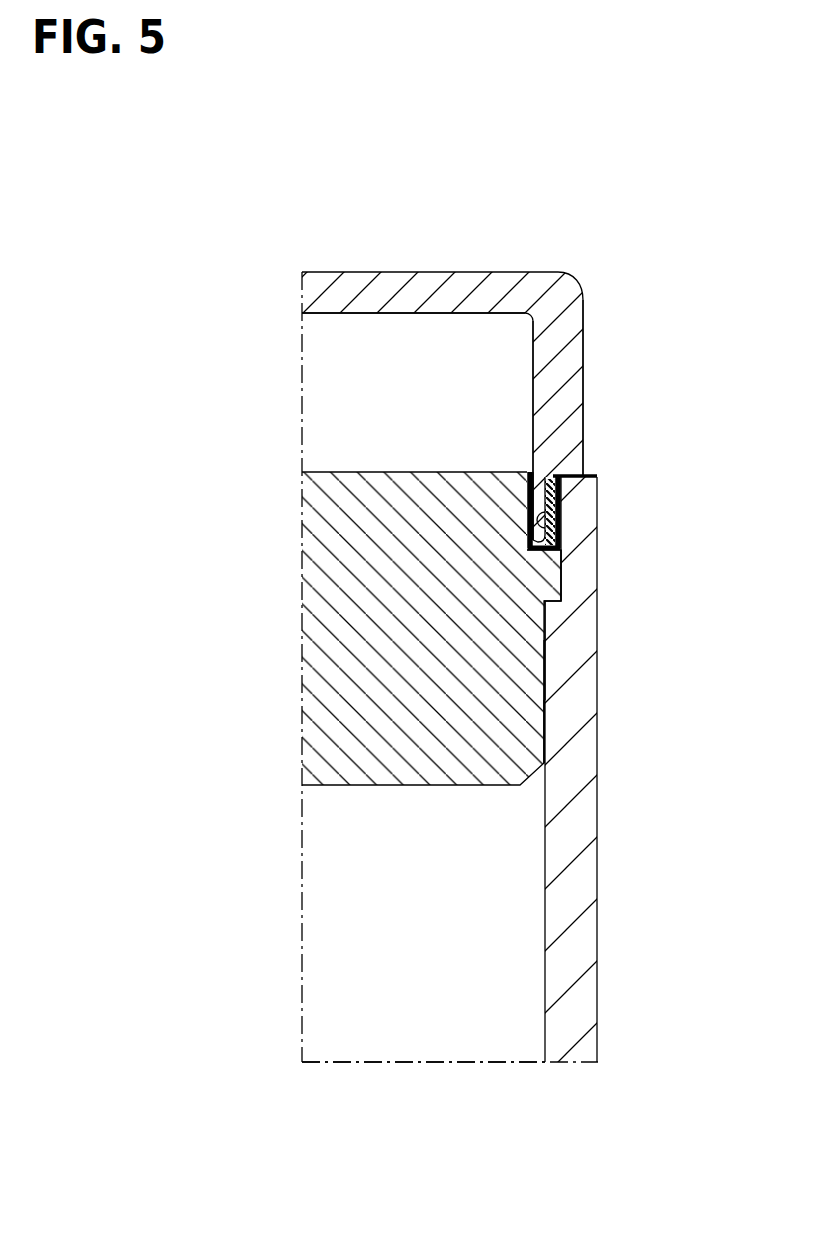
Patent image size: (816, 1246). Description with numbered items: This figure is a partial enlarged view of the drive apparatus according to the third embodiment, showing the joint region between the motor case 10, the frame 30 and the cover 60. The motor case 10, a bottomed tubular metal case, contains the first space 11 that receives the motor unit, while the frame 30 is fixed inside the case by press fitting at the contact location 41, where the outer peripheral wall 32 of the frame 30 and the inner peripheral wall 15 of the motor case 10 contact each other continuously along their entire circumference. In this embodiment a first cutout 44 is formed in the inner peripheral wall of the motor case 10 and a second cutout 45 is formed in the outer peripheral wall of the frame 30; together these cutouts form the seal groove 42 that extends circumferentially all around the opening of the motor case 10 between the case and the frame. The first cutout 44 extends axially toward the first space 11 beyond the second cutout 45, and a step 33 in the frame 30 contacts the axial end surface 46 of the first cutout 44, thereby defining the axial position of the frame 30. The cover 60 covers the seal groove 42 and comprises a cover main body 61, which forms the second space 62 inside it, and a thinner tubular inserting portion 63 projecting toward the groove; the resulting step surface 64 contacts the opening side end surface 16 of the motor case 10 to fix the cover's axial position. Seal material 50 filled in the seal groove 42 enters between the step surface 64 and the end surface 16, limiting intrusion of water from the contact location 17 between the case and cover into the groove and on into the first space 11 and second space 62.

The motor case 10 is at (572, 888).
The first space 11 is at (443, 938).
The inner peripheral wall 15 is at (550, 741).
The opening side end surface 16 is at (593, 478).
The contact location 17 is at (597, 470).
The frame 30 is at (378, 672).
The outer peripheral wall 32 is at (545, 692).
The step 33 is at (549, 604).
The contact location 41 is at (557, 669).
The seal groove 42 is at (562, 486).
The first cutout 44 is at (562, 509).
The second cutout 45 is at (526, 540).
The axial end surface 46 is at (563, 593).
The seal material 50 is at (562, 539).
The cover 60 is at (410, 260).
The cover main body 61 is at (565, 326).
The second space 62 is at (434, 406).
The inserting portion 63 is at (542, 500).
The step surface 64 is at (575, 492).